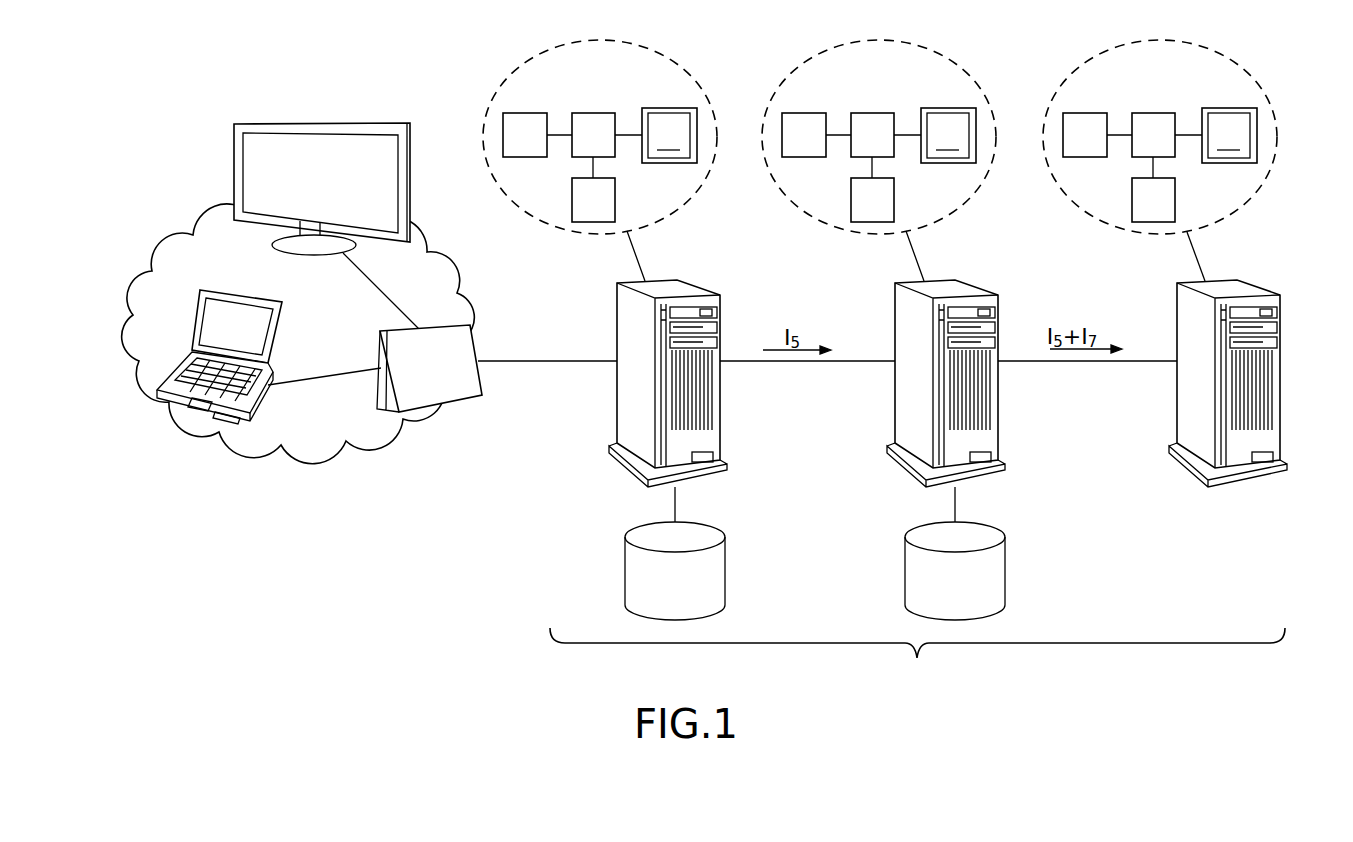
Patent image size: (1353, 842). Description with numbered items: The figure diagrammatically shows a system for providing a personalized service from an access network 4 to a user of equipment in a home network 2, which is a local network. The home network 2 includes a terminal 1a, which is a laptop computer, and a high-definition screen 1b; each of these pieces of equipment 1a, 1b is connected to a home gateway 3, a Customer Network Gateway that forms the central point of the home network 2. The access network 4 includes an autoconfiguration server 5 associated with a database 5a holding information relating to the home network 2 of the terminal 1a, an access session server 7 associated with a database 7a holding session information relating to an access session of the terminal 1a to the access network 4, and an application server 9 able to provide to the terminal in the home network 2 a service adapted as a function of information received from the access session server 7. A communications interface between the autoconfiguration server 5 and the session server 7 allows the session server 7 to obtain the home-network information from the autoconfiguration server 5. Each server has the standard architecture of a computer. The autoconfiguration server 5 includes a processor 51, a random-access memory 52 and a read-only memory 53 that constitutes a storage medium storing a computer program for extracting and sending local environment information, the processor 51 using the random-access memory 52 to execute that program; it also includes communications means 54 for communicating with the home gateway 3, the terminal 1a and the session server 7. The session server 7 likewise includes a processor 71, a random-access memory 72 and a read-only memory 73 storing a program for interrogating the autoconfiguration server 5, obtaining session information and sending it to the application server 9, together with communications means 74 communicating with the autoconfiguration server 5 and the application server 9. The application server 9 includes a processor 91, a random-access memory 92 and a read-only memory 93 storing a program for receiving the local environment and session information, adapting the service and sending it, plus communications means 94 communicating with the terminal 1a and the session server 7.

The terminal 1a is at (248, 340).
The high-definition screen 1b is at (328, 189).
The home network 2 is at (263, 463).
The home gateway 3 is at (430, 379).
The access network 4 is at (917, 657).
The autoconfiguration server 5 is at (622, 315).
The database 5a is at (625, 565).
The access session server 7 is at (906, 315).
The database 7a is at (905, 565).
The application server 9 is at (1182, 315).
The processor 51 is at (582, 148).
The random-access memory 52 is at (514, 148).
The read-only memory 53 is at (661, 108).
The communications means 54 is at (582, 213).
The processor 71 is at (861, 148).
The random-access memory 72 is at (793, 148).
The read-only memory 73 is at (940, 108).
The communications means 74 is at (861, 213).
The processor 91 is at (1142, 148).
The random-access memory 92 is at (1074, 148).
The read-only memory 93 is at (1220, 108).
The communications means 94 is at (1142, 213).